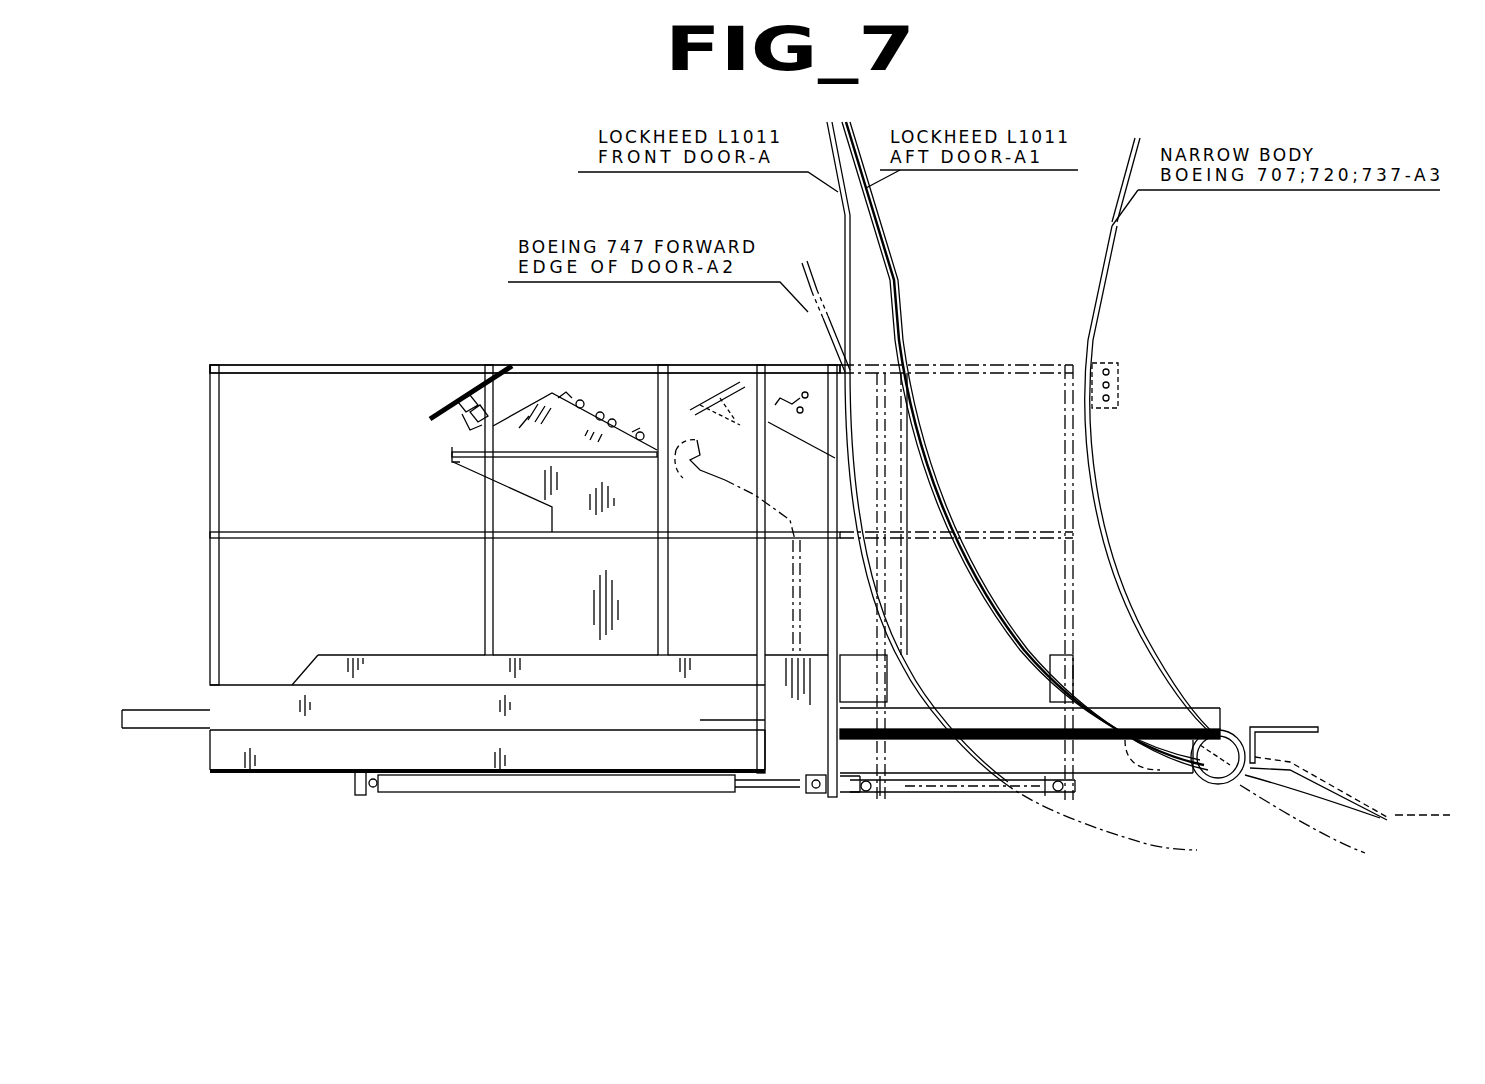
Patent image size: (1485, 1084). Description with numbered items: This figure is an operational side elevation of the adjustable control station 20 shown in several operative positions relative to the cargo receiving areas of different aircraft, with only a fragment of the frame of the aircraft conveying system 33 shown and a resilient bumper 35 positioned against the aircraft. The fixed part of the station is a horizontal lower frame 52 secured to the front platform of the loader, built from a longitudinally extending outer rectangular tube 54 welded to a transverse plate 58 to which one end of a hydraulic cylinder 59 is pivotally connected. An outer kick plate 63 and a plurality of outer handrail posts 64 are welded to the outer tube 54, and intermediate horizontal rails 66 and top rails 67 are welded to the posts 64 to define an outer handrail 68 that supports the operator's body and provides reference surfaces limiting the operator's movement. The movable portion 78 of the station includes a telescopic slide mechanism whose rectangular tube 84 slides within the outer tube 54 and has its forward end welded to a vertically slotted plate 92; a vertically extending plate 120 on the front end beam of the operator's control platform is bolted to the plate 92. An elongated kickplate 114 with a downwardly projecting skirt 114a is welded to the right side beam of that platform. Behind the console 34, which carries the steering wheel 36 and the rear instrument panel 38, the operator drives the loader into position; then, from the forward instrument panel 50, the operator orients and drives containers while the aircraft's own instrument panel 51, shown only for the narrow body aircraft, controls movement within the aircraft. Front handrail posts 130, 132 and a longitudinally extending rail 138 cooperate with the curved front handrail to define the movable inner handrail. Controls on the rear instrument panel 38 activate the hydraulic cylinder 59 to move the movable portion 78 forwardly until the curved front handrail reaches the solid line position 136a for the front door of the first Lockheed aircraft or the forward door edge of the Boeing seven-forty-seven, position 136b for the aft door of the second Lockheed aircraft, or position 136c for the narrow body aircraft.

The adjustable control station 20 is at (458, 312).
The aircraft conveying system 33 is at (1296, 722).
The console 34 is at (795, 560).
The resilient bumper 35 is at (1228, 730).
The steering wheel 36 is at (457, 414).
The rear instrument panel 38 is at (458, 450).
The forward instrument panel 50 is at (602, 428).
The instrument panel of the aircraft 51 is at (1118, 368).
The horizontal lower frame 52 is at (262, 772).
The outer rectangular tube 54 is at (218, 753).
The transverse plate 58 is at (358, 782).
The hydraulic cylinder 59 is at (512, 790).
The outer kick plate 63 is at (443, 707).
The outer handrail posts 64 is at (485, 556).
The intermediate horizontal rails 66 is at (270, 532).
The top rails 67 is at (307, 365).
The outer handrail 68 is at (246, 362).
The movable portion 78 is at (840, 656).
The rectangular tube 84 is at (770, 750).
The plate 92 is at (832, 772).
The elongated kickplate 114 is at (318, 660).
The skirt 114a is at (770, 710).
The vertically extending plate 120 is at (845, 702).
The front handrail post 130 is at (657, 560).
The front handrail post 132 is at (830, 455).
The front handrail position 136a is at (831, 368).
The front handrail position 136b is at (893, 338).
The front handrail position 136c is at (1068, 360).
The longitudinally extending rail 138 is at (760, 364).